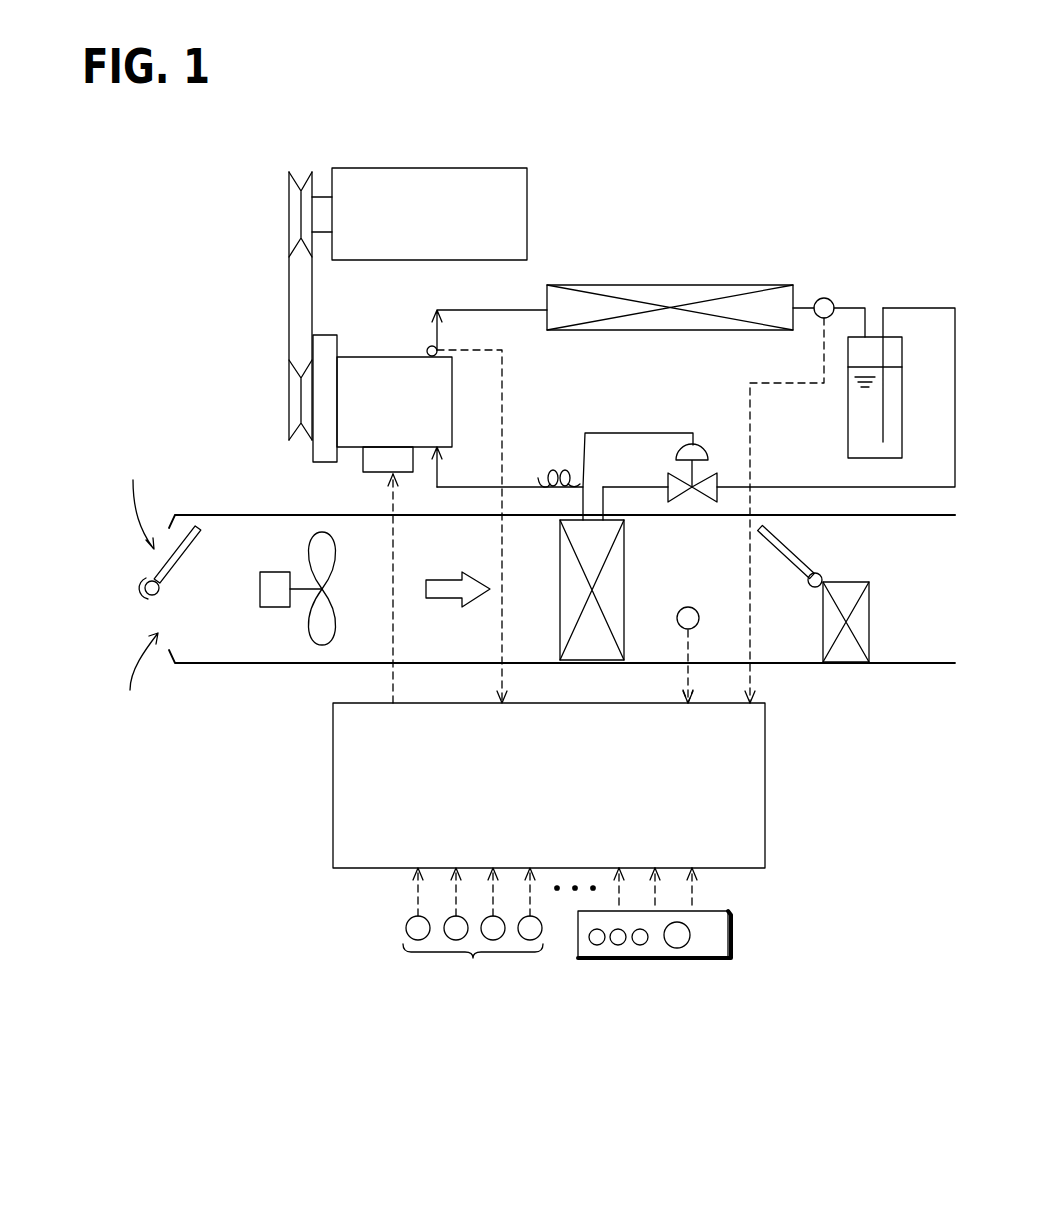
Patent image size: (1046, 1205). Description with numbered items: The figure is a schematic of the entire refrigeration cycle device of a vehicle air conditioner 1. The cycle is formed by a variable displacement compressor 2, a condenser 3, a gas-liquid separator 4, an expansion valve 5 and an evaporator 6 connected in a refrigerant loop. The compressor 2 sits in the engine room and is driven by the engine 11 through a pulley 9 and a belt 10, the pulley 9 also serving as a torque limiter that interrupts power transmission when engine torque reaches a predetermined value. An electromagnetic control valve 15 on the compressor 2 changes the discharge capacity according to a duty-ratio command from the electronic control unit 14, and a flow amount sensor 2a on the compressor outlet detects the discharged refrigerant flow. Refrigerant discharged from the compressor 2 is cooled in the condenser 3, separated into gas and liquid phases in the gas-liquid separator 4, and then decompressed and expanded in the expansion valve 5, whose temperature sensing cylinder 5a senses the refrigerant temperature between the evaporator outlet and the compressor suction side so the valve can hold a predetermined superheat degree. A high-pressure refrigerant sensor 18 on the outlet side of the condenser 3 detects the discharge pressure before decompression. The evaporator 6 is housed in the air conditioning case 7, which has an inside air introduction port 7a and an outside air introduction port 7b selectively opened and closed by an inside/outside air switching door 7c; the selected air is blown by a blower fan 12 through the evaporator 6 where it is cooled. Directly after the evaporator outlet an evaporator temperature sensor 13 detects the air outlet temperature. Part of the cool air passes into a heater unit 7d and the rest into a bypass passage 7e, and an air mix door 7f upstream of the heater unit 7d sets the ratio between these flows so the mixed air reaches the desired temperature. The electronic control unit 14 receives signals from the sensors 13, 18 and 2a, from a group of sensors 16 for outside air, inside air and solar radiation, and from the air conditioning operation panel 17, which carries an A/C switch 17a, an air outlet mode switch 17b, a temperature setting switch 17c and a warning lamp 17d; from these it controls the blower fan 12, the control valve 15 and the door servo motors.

The air conditioner 1 is at (906, 294).
The variable displacement compressor 2 is at (378, 369).
The flow amount sensor 2a is at (430, 346).
The condenser 3 is at (668, 290).
The gas-liquid separator 4 is at (853, 413).
The expansion valve 5 is at (712, 468).
The temperature sensing cylinder 5a is at (554, 470).
The evaporator 6 is at (566, 570).
The air conditioning case 7 is at (275, 666).
The inside air introduction port 7a is at (129, 499).
The outside air introduction port 7b is at (131, 677).
The inside/outside air switching door 7c is at (199, 521).
The heater unit 7d is at (847, 655).
The bypass passage 7e is at (845, 555).
The air mix door 7f is at (790, 549).
The pulley 9 is at (288, 410).
The belt 10 is at (291, 298).
The engine 11 is at (517, 183).
The blower fan 12 is at (316, 540).
The evaporator temperature sensor 13 is at (690, 606).
The electronic control unit 14 is at (333, 835).
The electromagnetic control valve 15 is at (363, 471).
The group of sensors for air conditioning 16 is at (473, 930).
The air conditioning operation panel 17 is at (679, 962).
The A/C switch 17a is at (592, 945).
The air outlet mode switch 17b is at (616, 945).
The temperature setting switch 17c is at (637, 945).
The warning lamp 17d is at (683, 946).
The high-pressure refrigerant sensor 18 is at (824, 298).